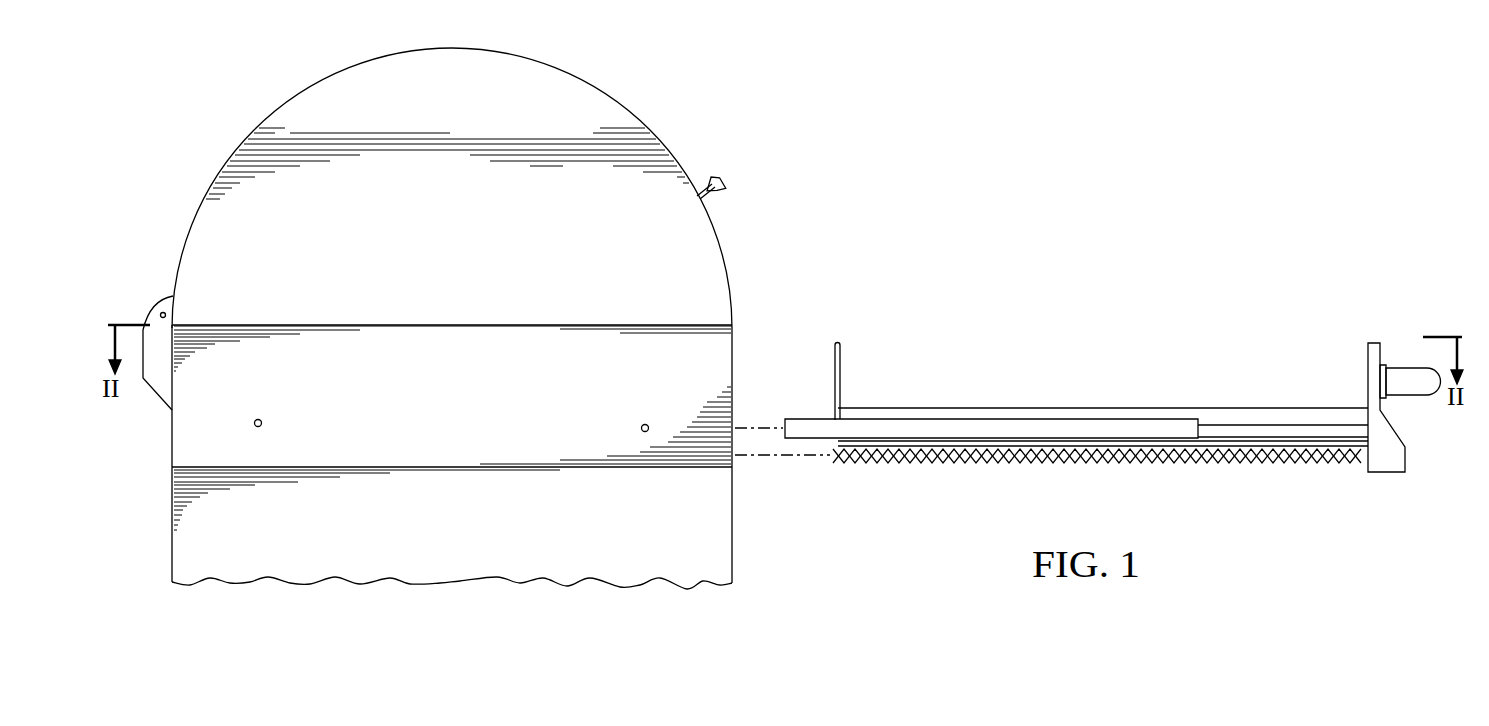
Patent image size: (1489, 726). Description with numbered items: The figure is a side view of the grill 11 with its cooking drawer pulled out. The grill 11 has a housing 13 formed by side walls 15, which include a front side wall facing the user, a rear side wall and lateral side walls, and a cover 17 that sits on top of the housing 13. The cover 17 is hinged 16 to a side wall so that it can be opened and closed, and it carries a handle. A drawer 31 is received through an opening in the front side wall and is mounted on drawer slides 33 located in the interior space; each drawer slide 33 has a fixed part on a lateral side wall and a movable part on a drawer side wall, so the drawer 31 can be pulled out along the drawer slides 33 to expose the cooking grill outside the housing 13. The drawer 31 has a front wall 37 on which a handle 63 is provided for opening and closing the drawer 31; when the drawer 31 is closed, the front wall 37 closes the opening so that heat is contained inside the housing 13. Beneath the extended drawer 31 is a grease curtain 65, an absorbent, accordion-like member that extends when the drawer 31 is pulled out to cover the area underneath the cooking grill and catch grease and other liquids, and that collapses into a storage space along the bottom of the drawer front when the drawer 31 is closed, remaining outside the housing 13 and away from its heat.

The grill 11 is at (962, 150).
The housing 13 is at (170, 457).
The side walls 15 is at (170, 558).
The hinge 16 is at (157, 300).
The cover 17 is at (276, 112).
The drawer 31 is at (1167, 408).
The drawer slides 33 is at (803, 418).
The front wall 37 is at (1384, 413).
The handle 63 is at (1410, 368).
The grease curtain 65 is at (1222, 462).